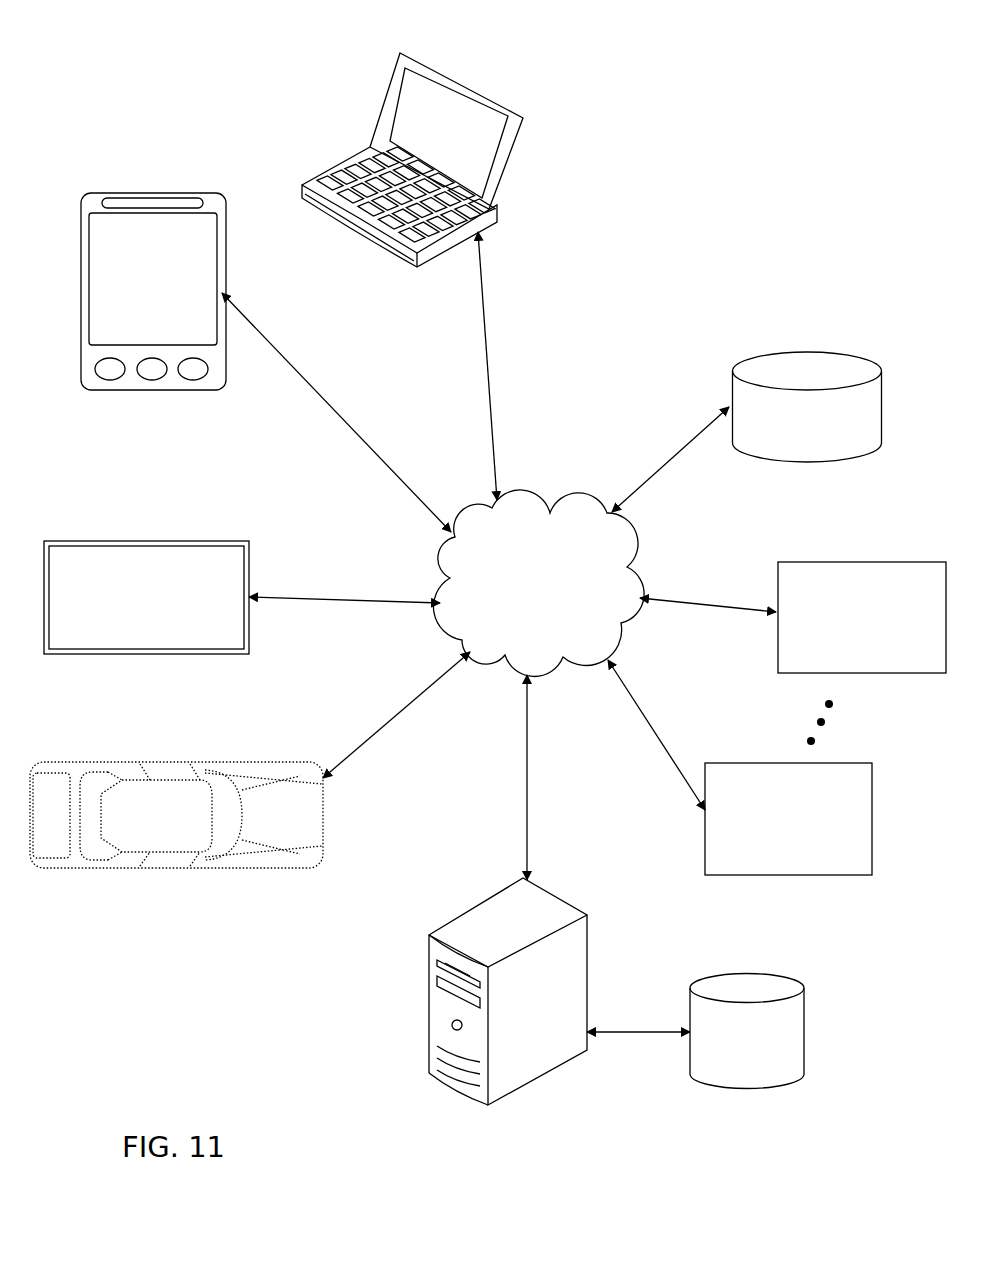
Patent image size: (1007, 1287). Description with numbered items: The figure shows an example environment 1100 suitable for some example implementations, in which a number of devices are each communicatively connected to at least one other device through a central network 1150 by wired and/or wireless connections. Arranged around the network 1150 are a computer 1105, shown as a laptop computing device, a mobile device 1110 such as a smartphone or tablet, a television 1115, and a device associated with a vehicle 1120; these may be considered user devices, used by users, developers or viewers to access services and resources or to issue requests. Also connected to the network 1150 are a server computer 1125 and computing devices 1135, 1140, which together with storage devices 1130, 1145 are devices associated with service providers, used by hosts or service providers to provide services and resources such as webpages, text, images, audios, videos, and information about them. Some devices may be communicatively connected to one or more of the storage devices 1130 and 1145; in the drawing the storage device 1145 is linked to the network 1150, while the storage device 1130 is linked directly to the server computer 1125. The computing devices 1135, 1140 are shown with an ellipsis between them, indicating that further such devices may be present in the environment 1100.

The environment 1100 is at (175, 54).
The computer 1105 is at (412, 160).
The mobile device 1110 is at (153, 291).
The television 1115 is at (146, 597).
The device associated with a vehicle 1120 is at (176, 815).
The server computer 1125 is at (508, 991).
The storage device 1130 is at (747, 1031).
The computing device 1135 is at (788, 819).
The computing device 1140 is at (862, 617).
The storage device 1145 is at (807, 407).
The network 1150 is at (538, 583).